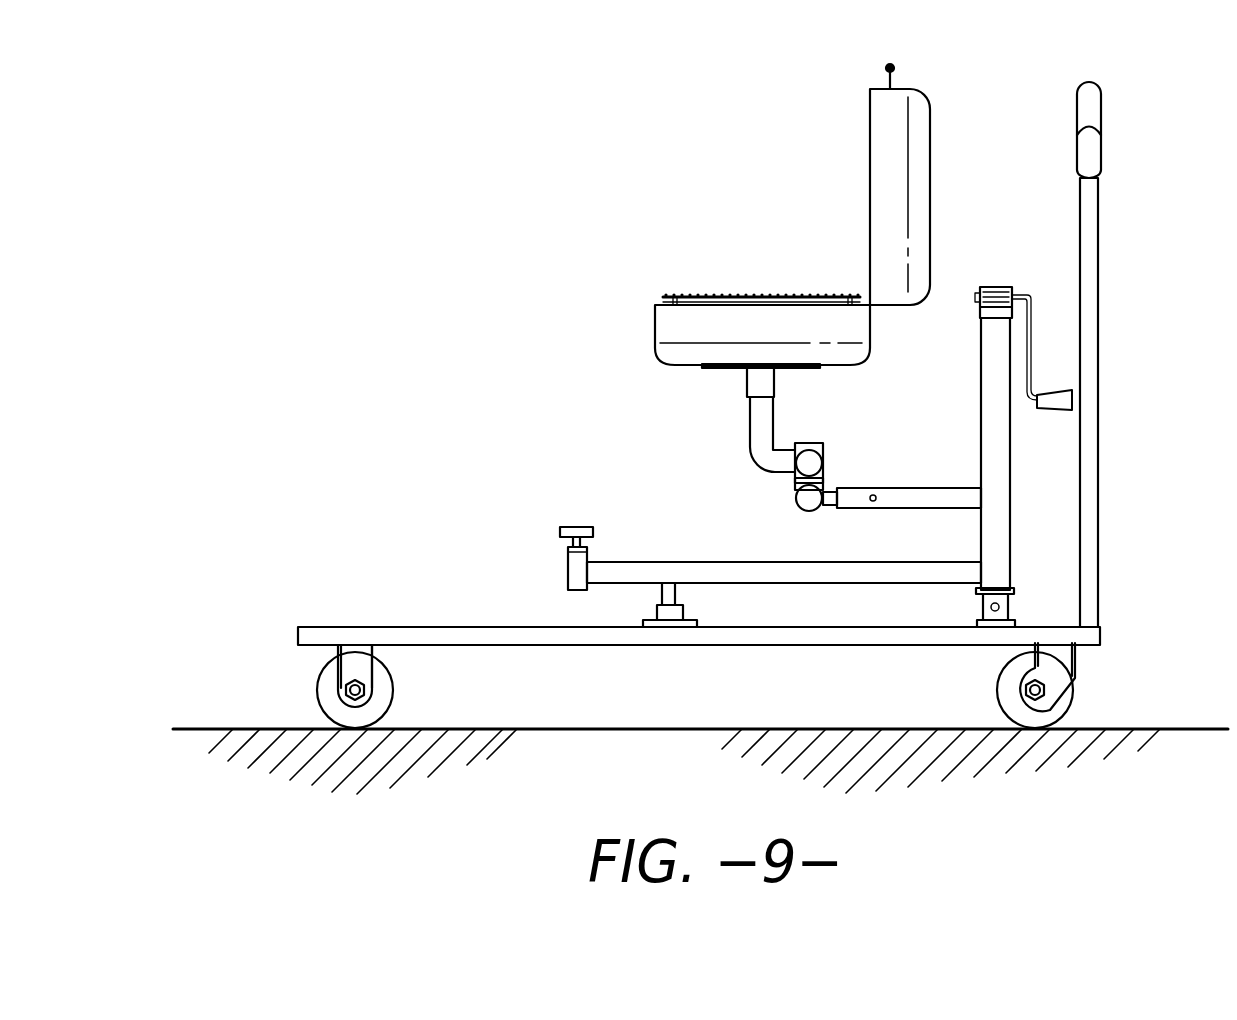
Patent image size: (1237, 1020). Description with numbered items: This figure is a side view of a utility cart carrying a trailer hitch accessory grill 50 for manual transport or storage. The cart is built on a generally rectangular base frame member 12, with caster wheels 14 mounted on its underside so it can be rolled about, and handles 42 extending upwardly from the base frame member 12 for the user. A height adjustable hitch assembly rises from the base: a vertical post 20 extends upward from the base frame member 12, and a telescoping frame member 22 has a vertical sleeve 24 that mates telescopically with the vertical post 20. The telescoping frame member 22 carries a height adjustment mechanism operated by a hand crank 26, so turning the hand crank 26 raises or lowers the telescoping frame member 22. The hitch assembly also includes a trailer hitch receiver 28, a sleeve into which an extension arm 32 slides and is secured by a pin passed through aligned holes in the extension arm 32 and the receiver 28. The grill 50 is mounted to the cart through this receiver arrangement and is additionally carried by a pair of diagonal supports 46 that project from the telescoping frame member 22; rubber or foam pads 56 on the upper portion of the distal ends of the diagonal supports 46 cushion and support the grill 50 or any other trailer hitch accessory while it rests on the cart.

The base frame member 12 is at (806, 636).
The caster wheels 14 is at (387, 701).
The vertical post 20 is at (998, 600).
The telescoping frame member 22 is at (995, 385).
The vertical sleeve 24 is at (995, 468).
The hand crank 26 is at (1057, 390).
The trailer hitch receiver 28 is at (937, 488).
The extension arm 32 is at (830, 503).
The handles 42 is at (1090, 112).
The diagonal supports 46 is at (720, 570).
The grill 50 is at (668, 320).
The pads 56 is at (570, 527).